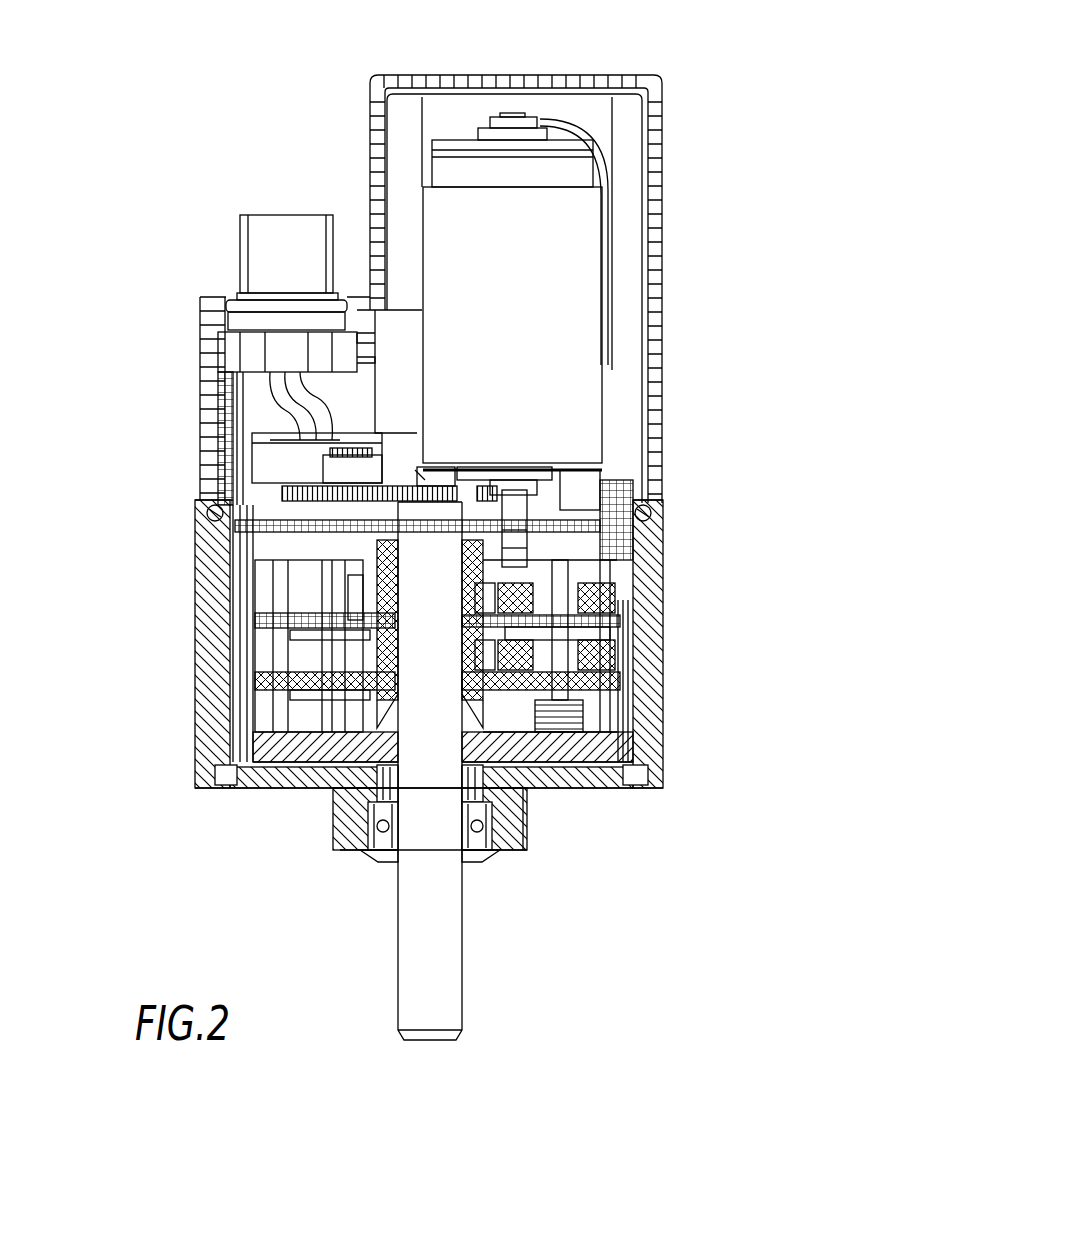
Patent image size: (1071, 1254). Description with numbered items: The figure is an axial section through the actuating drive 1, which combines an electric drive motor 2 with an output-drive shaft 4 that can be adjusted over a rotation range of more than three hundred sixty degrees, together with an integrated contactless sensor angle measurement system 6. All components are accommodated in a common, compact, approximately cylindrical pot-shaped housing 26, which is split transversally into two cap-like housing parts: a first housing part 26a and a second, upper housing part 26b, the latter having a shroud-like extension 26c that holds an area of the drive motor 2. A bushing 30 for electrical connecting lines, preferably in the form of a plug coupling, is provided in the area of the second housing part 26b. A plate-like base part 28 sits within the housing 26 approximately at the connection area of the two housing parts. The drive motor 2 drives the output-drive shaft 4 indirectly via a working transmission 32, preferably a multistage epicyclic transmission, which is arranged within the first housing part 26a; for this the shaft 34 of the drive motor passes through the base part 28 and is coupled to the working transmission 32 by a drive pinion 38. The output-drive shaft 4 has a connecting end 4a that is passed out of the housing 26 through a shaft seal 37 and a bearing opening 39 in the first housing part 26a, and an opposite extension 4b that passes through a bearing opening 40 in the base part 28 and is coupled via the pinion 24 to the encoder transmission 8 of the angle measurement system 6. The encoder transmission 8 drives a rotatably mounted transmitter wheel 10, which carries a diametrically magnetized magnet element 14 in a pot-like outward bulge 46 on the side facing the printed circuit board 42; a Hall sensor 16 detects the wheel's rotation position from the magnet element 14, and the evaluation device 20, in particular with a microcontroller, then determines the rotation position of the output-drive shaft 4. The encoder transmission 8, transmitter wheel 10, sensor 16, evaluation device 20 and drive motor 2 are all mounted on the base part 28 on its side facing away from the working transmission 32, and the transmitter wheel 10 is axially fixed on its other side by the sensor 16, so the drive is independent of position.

The actuating drive 1 is at (165, 762).
The electric drive motor 2 is at (575, 393).
The output-drive shaft 4 is at (424, 853).
The connecting end 4a is at (450, 945).
The extension 4b is at (445, 520).
The sensor angle measurement system 6 is at (287, 470).
The encoder transmission 8 is at (400, 476).
The transmitter wheel 10 is at (258, 497).
The magnet element 14 is at (368, 475).
The sensor 16 is at (278, 436).
The evaluation device 20 is at (370, 432).
The pinion 24 is at (433, 492).
The housing 26 is at (204, 587).
The first housing part 26a is at (650, 627).
The second housing part 26b is at (655, 438).
The shroud-like extension 26c is at (620, 80).
The base part 28 is at (235, 523).
The bushing 30 is at (268, 290).
The working transmission 32 is at (342, 705).
The shaft of the drive motor 34 is at (510, 531).
The shaft seal 37 is at (383, 778).
The drive pinion 38 is at (537, 549).
The bearing opening 39 is at (458, 818).
The bearing opening 40 is at (402, 522).
The printed circuit board 42 is at (335, 442).
The outward bulge 46 is at (333, 462).